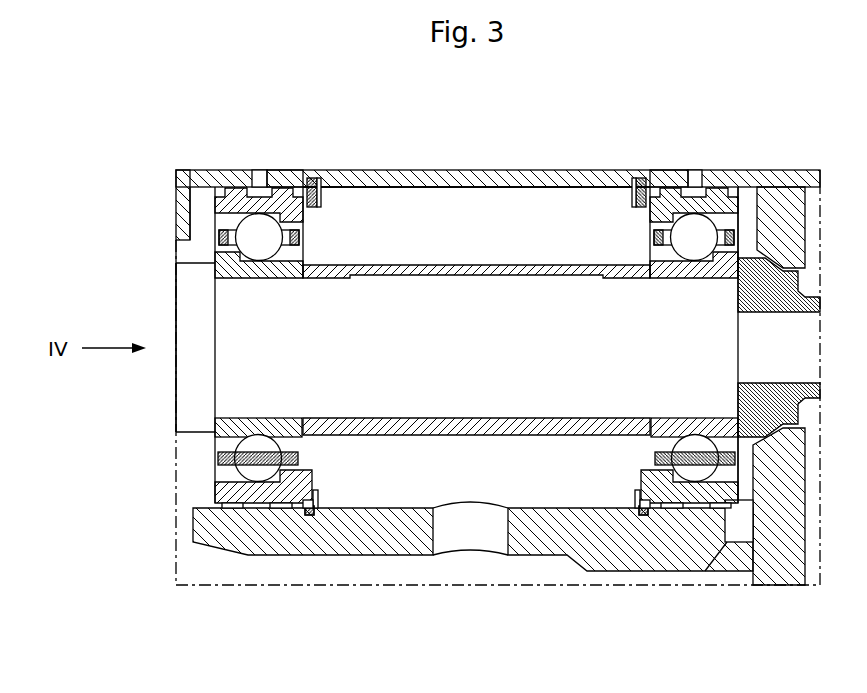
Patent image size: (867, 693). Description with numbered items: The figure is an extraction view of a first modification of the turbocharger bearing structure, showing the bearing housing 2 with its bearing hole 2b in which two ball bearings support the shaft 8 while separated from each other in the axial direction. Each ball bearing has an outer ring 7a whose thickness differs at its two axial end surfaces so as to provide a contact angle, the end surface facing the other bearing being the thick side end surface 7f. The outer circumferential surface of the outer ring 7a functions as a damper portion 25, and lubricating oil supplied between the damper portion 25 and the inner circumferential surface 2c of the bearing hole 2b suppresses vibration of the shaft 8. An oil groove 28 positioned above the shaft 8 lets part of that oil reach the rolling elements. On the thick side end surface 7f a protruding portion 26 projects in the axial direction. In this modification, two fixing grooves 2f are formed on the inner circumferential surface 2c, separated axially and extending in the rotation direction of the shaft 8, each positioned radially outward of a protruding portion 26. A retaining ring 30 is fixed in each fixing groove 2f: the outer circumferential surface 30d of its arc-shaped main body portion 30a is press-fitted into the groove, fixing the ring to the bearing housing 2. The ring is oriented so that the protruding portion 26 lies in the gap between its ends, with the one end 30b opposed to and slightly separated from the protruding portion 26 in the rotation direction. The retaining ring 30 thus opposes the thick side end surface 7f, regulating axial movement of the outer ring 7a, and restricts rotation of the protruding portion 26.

The bearing housing 2 is at (498, 170).
The bearing hole 2b is at (178, 493).
The inner circumferential surface 2c is at (178, 493).
The fixing groove 2f is at (288, 510).
The outer ring 7a is at (307, 217).
The thick side end surface 7f is at (307, 217).
The shaft 8 is at (468, 361).
The damper portion 25 is at (213, 170).
The protruding portion 26 is at (313, 478).
The oil groove 28 is at (300, 170).
The retaining ring 30 is at (314, 498).
The main body portion 30a is at (314, 498).
The one end 30b is at (313, 507).
The outer circumferential surface 30d is at (312, 170).